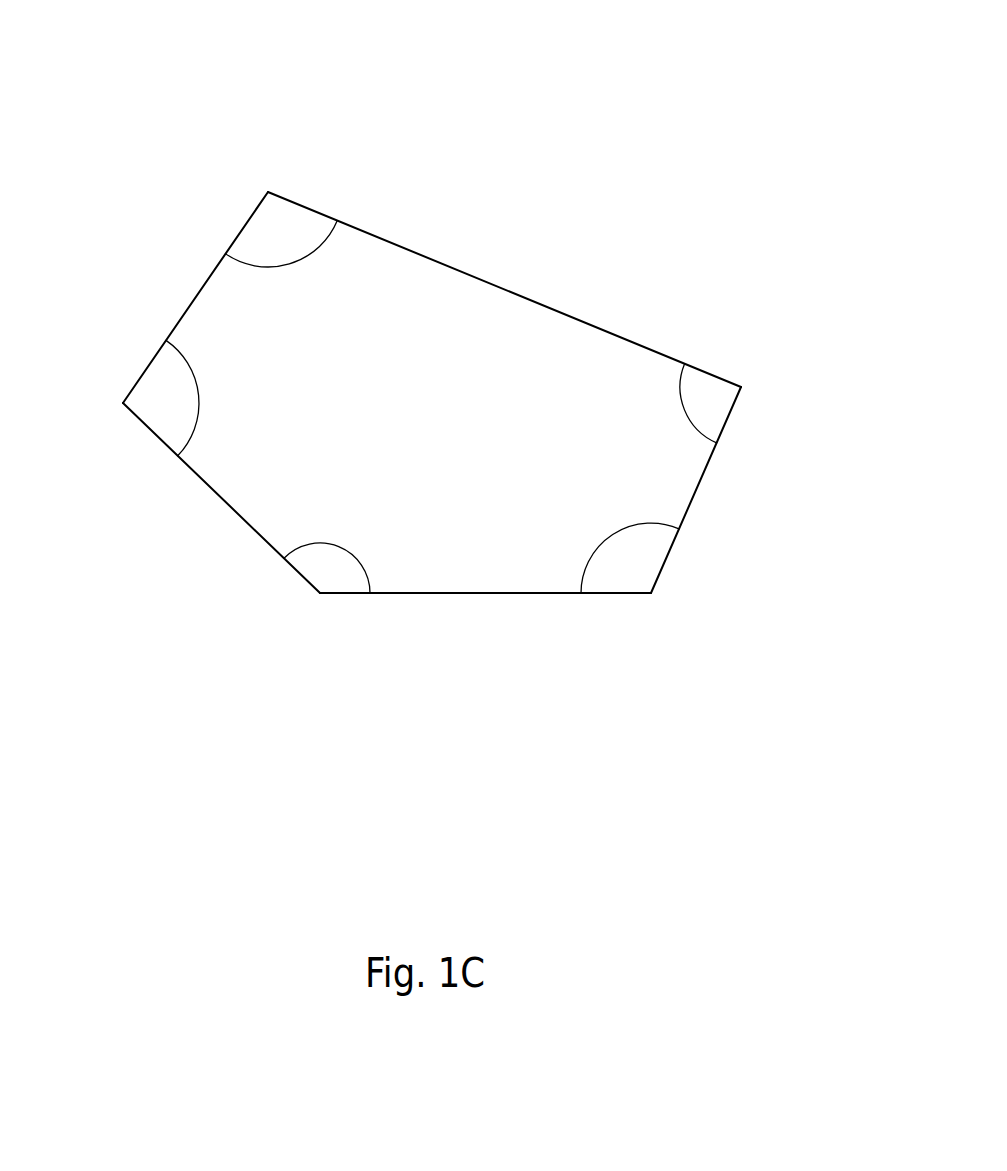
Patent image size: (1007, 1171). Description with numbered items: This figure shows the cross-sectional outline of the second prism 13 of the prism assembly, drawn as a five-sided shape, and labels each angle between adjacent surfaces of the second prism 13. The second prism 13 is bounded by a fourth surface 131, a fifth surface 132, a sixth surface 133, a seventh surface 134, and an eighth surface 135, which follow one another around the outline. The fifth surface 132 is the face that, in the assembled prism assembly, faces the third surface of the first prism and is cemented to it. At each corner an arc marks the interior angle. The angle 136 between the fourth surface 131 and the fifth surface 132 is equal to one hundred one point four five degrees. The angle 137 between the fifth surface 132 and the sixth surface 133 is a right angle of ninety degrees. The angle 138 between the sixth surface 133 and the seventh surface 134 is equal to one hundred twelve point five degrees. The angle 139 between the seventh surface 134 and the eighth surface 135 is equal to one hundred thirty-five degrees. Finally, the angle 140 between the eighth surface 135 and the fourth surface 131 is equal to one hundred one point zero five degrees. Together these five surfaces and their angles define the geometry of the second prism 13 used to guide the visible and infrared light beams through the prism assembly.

The second prism 13 is at (136, 46).
The fourth surface 131 is at (197, 298).
The fifth surface 132 is at (457, 268).
The sixth surface 133 is at (697, 490).
The seventh surface 134 is at (485, 593).
The eighth surface 135 is at (245, 520).
The angle between the fourth surface and the fifth surface 136 is at (313, 248).
The angle between the fifth surface and the sixth surface 137 is at (678, 385).
The angle between the sixth surface and the seventh surface 138 is at (590, 560).
The angle between the seventh surface and the eighth surface 139 is at (320, 542).
The angle between the eighth surface and the fourth surface 140 is at (193, 373).